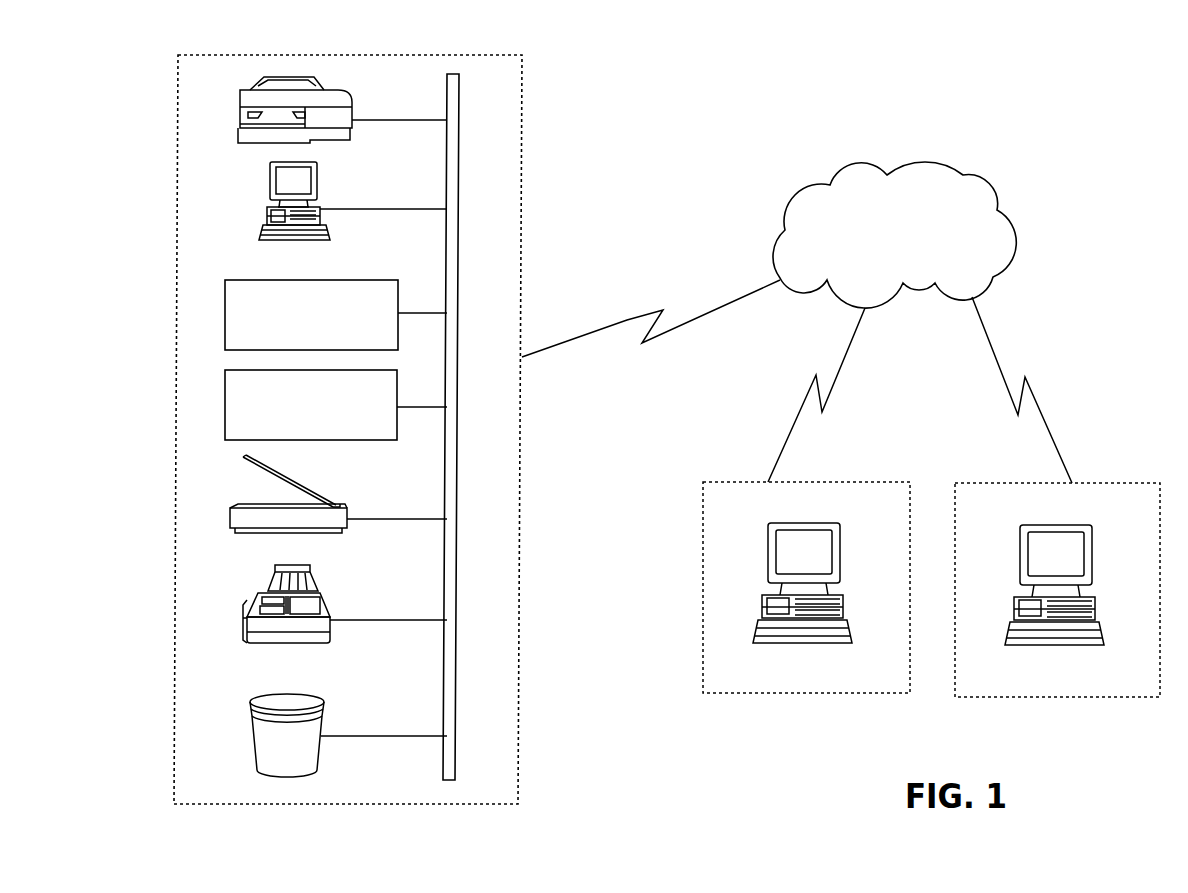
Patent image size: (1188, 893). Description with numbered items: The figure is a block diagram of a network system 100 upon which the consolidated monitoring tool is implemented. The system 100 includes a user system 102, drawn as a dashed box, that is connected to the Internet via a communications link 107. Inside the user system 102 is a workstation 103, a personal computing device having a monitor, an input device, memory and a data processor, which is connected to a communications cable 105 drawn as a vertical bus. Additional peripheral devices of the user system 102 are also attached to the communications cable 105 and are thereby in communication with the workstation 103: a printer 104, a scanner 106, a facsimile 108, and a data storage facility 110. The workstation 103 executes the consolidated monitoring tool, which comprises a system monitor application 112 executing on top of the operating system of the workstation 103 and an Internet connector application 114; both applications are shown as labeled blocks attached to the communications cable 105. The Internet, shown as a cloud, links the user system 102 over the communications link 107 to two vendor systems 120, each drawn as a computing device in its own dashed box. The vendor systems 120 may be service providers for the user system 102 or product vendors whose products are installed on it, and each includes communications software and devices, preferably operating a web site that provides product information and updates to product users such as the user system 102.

The system 100 is at (1067, 177).
The user system 102 is at (522, 95).
The workstation 103 is at (318, 187).
The printer 104 is at (355, 115).
The communications cable 105 is at (461, 136).
The scanner 106 is at (335, 507).
The communications link 107 is at (628, 318).
The facsimile 108 is at (345, 587).
The data storage facility 110 is at (326, 705).
The system monitor application 112 is at (370, 280).
The Internet connector application 114 is at (383, 371).
The vendor systems 120 is at (876, 482).